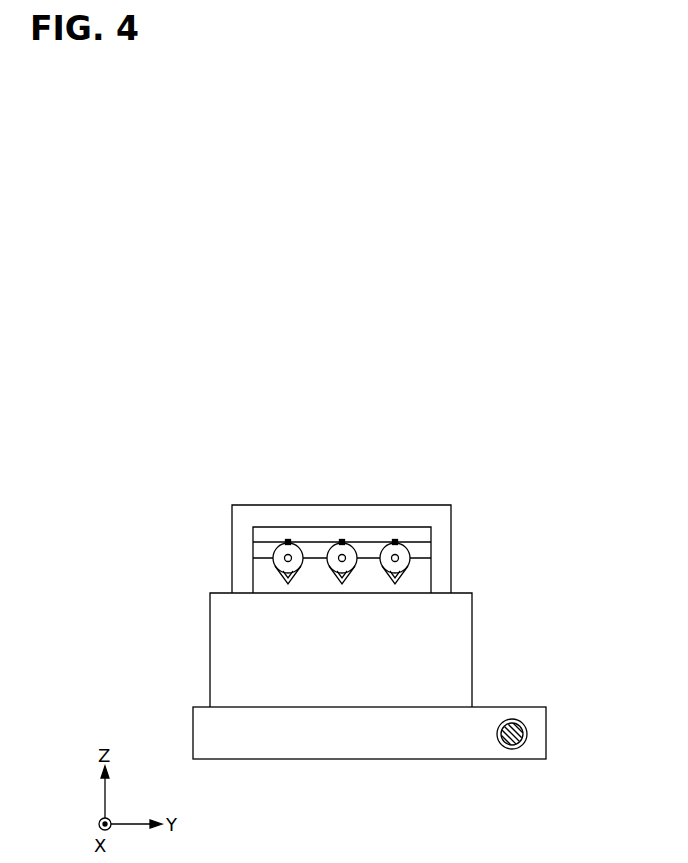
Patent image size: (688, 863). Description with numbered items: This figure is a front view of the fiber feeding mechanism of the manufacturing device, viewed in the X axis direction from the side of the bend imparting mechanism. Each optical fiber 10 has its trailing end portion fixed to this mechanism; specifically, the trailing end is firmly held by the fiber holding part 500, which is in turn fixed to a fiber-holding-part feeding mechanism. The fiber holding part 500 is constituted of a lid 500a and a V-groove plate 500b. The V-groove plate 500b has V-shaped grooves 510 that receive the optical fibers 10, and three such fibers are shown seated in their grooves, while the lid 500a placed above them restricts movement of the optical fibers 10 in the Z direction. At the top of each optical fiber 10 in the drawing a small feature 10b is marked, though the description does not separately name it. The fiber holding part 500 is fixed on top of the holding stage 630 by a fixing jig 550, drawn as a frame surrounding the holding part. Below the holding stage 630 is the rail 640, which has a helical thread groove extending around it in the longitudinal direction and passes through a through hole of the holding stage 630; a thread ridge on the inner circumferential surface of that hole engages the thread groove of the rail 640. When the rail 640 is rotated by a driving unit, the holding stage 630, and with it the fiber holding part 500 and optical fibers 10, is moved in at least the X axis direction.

The optical fiber 10 is at (297, 567).
The electrode of light emitting device 10b is at (288, 540).
The fiber holding part 500 is at (540, 527).
The lid 500a is at (421, 534).
The V-groove plate 500b is at (421, 566).
The V-shaped groove 510 is at (283, 579).
The fixing jig 550 is at (440, 518).
The holding stage 630 is at (220, 623).
The rail 640 is at (527, 730).